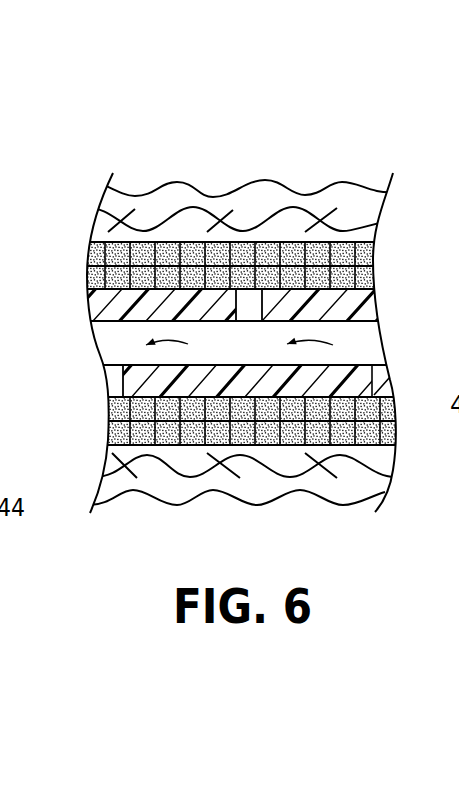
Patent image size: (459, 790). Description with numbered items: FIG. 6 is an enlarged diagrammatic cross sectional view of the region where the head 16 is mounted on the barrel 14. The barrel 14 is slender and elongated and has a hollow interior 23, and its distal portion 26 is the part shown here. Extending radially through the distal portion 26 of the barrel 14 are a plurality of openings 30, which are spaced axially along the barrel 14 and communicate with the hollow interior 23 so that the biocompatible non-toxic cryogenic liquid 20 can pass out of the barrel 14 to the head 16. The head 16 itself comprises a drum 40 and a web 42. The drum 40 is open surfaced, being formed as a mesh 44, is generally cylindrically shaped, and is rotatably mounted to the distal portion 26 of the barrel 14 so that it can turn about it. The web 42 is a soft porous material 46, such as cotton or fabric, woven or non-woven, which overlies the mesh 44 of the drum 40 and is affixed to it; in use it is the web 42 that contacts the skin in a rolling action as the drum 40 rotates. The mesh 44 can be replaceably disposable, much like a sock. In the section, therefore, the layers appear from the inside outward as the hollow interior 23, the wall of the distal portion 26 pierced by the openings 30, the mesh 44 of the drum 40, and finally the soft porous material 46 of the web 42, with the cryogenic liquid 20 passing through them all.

The barrel 14 is at (208, 259).
The distal portion 26 is at (101, 305).
The head 16 is at (313, 190).
The openings 30 is at (247, 297).
The hollow interior 23 is at (370, 355).
The biocompatible non-toxic cryogenic liquid 20 is at (167, 340).
The web 42 is at (211, 454).
The soft porous material 46 is at (123, 455).
The drum 40 is at (266, 456).
The mesh 44 is at (393, 430).